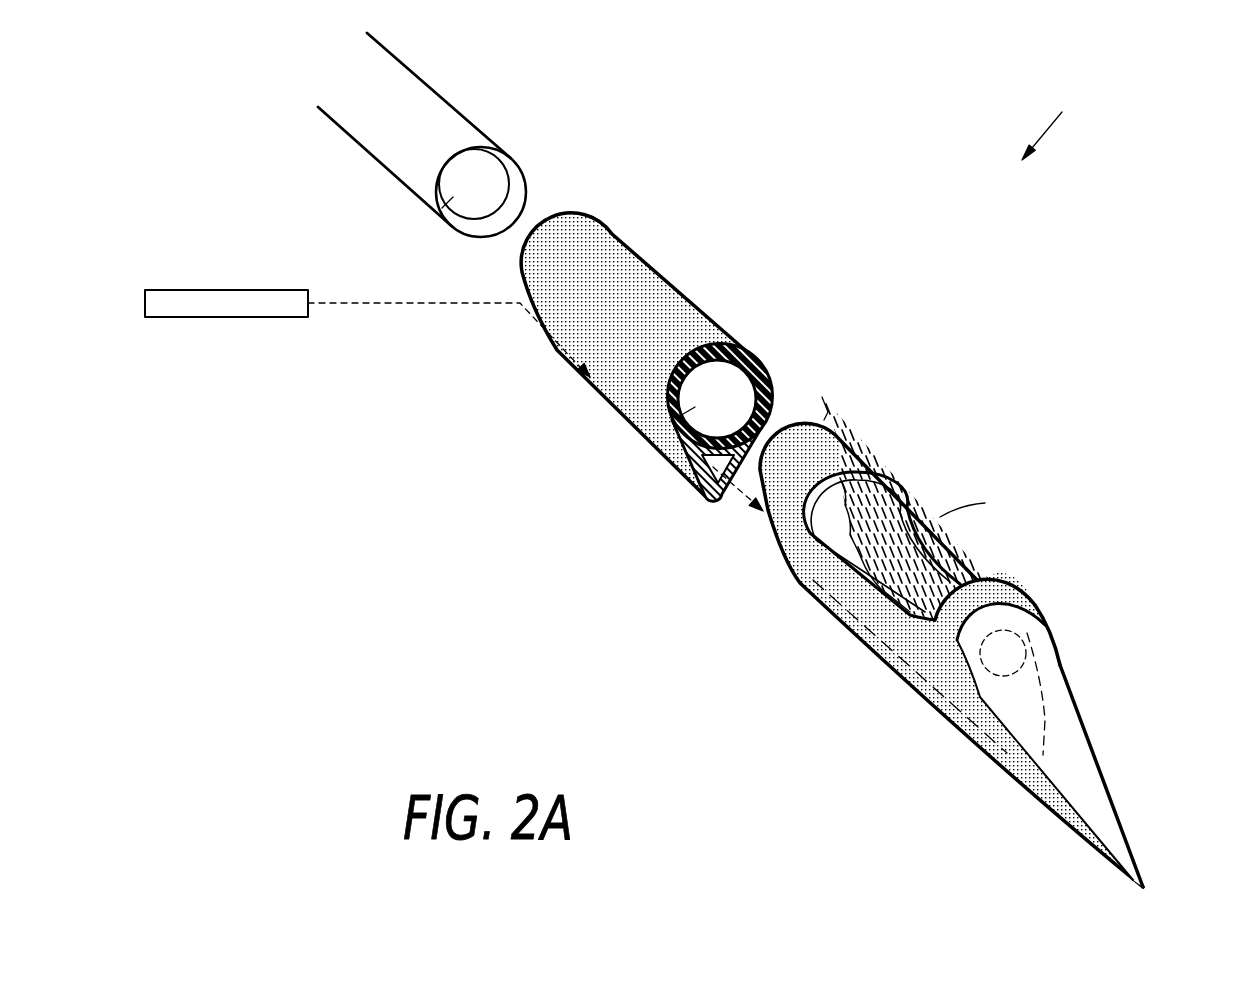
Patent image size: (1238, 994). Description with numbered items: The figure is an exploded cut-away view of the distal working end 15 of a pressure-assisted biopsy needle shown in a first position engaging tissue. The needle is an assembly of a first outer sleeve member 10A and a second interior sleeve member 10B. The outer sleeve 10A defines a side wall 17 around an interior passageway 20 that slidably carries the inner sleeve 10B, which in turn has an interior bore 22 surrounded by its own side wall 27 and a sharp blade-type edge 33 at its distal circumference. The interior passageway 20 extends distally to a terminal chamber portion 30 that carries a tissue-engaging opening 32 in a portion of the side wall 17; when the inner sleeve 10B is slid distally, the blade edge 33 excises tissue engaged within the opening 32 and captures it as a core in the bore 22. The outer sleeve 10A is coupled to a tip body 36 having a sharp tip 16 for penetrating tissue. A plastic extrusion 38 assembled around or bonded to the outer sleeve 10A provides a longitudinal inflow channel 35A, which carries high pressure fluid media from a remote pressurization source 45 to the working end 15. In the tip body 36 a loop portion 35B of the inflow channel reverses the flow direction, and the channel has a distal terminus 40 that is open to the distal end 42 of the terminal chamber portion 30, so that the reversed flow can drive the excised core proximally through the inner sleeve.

The first outer sleeve member 10A is at (750, 360).
The second interior sleeve member 10B is at (408, 84).
The distal working end 15 is at (1060, 121).
The sharp tip 16 is at (1133, 860).
The side wall 17 is at (770, 380).
The interior passageway 20 is at (693, 410).
The interior passageway or bore 22 is at (442, 200).
The side wall 27 is at (373, 153).
The terminal chamber portion 30 is at (810, 535).
The tissue-engaging opening 32 is at (800, 557).
The blade edge 33 is at (520, 180).
The longitudinal inflow channel 35A is at (703, 497).
The loop portion of inflow channel 35B is at (995, 748).
The tip body 36 is at (1080, 760).
The plastic extrusion 38 is at (577, 392).
The distal terminus 40 is at (1023, 642).
The distal end of terminal chamber portion 42 is at (993, 623).
The pressurization source 45 is at (230, 317).